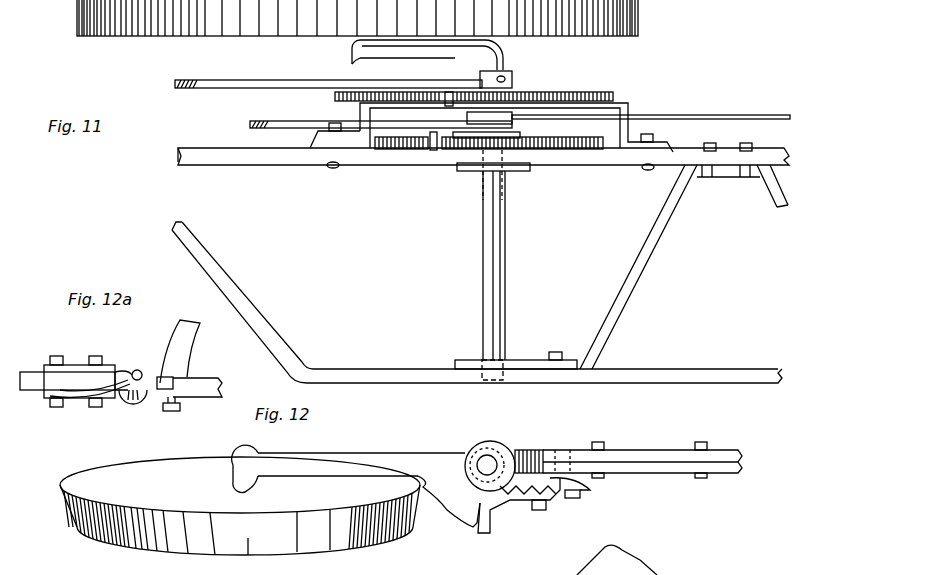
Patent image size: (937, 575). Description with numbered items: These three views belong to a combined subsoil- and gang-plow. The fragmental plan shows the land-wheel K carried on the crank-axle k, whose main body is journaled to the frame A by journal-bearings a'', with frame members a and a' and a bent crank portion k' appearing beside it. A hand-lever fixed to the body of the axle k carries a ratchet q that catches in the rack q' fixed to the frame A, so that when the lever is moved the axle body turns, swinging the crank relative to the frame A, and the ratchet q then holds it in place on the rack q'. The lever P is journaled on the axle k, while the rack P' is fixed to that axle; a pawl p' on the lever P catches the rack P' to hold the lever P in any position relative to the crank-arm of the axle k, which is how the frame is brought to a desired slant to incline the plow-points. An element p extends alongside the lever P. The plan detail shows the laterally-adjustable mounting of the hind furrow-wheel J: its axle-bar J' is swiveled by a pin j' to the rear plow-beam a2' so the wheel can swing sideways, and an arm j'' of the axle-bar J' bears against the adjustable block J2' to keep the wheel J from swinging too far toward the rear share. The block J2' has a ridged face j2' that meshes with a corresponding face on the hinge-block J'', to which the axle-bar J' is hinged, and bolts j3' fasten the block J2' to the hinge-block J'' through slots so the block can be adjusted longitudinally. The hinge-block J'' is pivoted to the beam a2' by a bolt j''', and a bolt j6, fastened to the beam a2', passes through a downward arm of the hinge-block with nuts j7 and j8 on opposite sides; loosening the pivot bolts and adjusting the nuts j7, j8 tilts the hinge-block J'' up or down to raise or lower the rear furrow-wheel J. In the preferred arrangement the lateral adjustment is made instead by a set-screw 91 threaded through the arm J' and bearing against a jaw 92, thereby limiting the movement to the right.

In FIG. 11, the gear wheel K is at (392, 28).
In FIG. 11, the axle k is at (507, 265).
In FIG. 11, the bent tube k' is at (415, 64).
In FIG. 11, the ratchet q is at (328, 72).
In FIG. 11, the rack q' is at (474, 83).
In FIG. 11, the lever P is at (381, 112).
In FIG. 11, the thin plate p is at (651, 101).
In FIG. 11, the rack P' is at (522, 165).
In FIG. 11, the pawl p' is at (406, 164).
In FIG. 11, the frame A is at (617, 163).
In FIG. 11, the plate edge a is at (225, 172).
In FIG. 11, the inclined arm a' is at (477, 302).
In FIG. 11, the journal-bearings a'' is at (511, 266).
In FIG. 12a, the rear plow-beam a2' is at (67, 370).
In FIG. 12, the rear plow-beam a2' is at (642, 445).
In FIG. 12a, the hind furrow-wheel J is at (197, 399).
In FIG. 12, the hind furrow-wheel J is at (240, 506).
In FIG. 12, the axle-bar J' is at (373, 484).
In FIG. 12, the hinge-block J'' is at (542, 443).
In FIG. 12a, the adjustable block J2' is at (178, 346).
In FIG. 12, the adjustable block J2' is at (534, 509).
In FIG. 12a, the pin j' is at (131, 367).
In FIG. 12, the pin j' is at (487, 445).
In FIG. 12, the arm j'' is at (475, 547).
In FIG. 12, the bolt j''' is at (610, 510).
In FIG. 12, the ridged face j2' is at (584, 494).
In FIG. 12, the bolts j3' is at (556, 519).
In FIG. 12a, the bolt j6 is at (112, 398).
In FIG. 12a, the nut j7 is at (158, 392).
In FIG. 12a, the nut j8 is at (177, 380).
In FIG. 12a, the set-screw 91 is at (173, 416).
In FIG. 12a, the jaw 92 is at (170, 365).